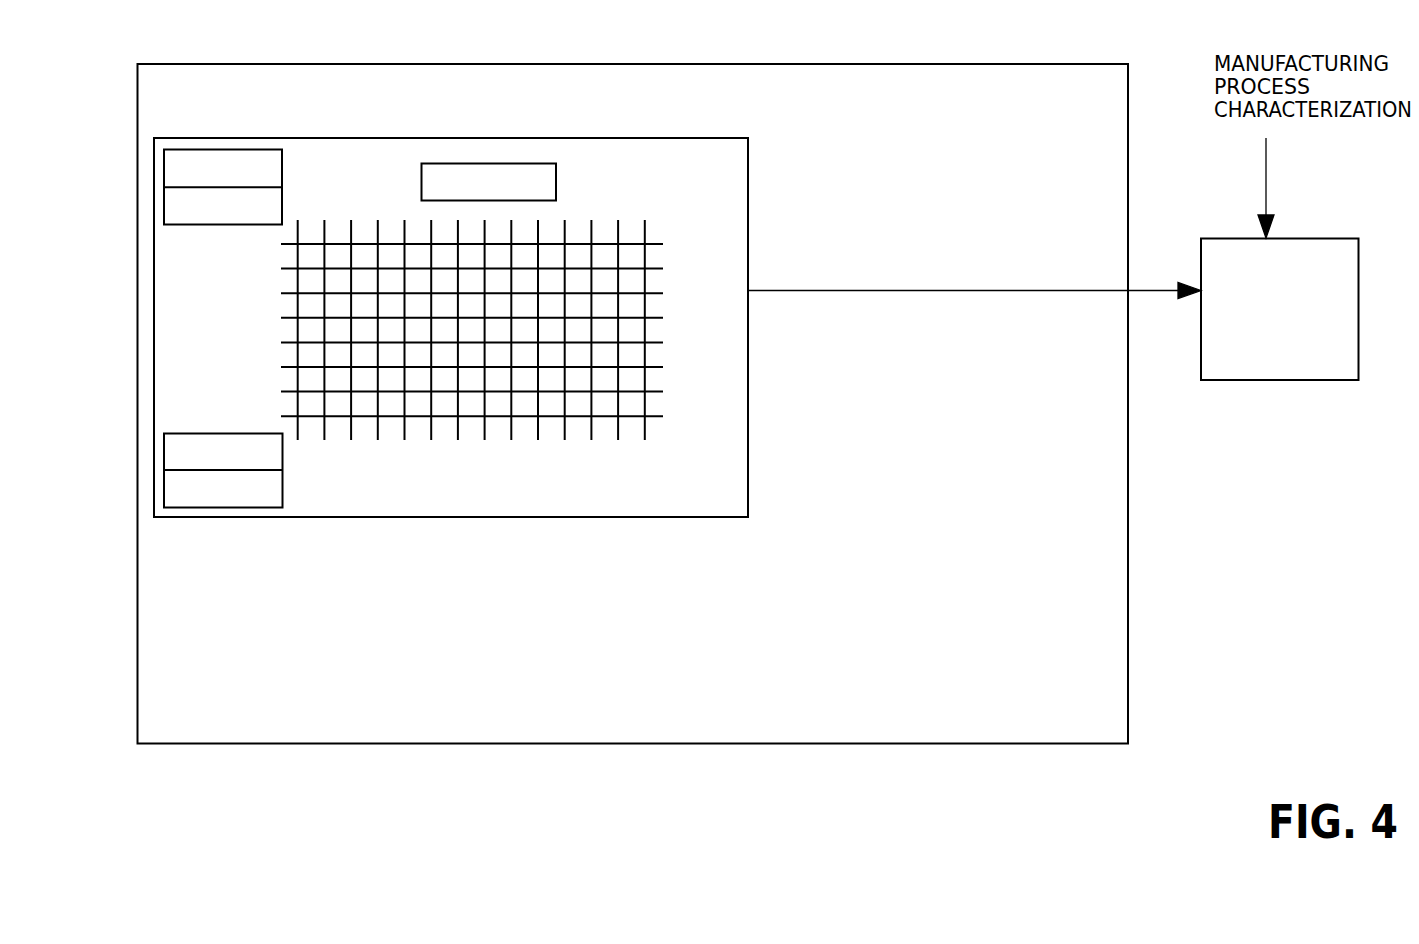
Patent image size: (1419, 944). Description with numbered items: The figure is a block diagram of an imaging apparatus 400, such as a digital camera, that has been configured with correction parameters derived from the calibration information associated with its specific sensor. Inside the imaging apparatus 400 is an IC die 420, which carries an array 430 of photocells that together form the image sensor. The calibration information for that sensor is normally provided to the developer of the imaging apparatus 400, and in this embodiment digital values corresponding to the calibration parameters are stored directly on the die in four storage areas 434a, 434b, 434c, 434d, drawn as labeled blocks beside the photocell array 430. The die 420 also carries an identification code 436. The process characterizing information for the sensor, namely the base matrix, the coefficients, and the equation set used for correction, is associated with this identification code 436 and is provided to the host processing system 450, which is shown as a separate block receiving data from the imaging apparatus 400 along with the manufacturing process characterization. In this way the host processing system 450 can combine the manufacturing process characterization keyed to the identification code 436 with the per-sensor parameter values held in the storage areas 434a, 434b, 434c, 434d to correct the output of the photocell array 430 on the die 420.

The imaging apparatus 400 is at (1038, 63).
The IC die 420 is at (451, 327).
The array of photocells 430 is at (663, 341).
The storage area 434a is at (284, 154).
The storage area 434b is at (260, 227).
The storage area 434c is at (256, 432).
The storage area 434d is at (285, 500).
The identification code 436 is at (558, 196).
The host processing system 450 is at (1317, 237).